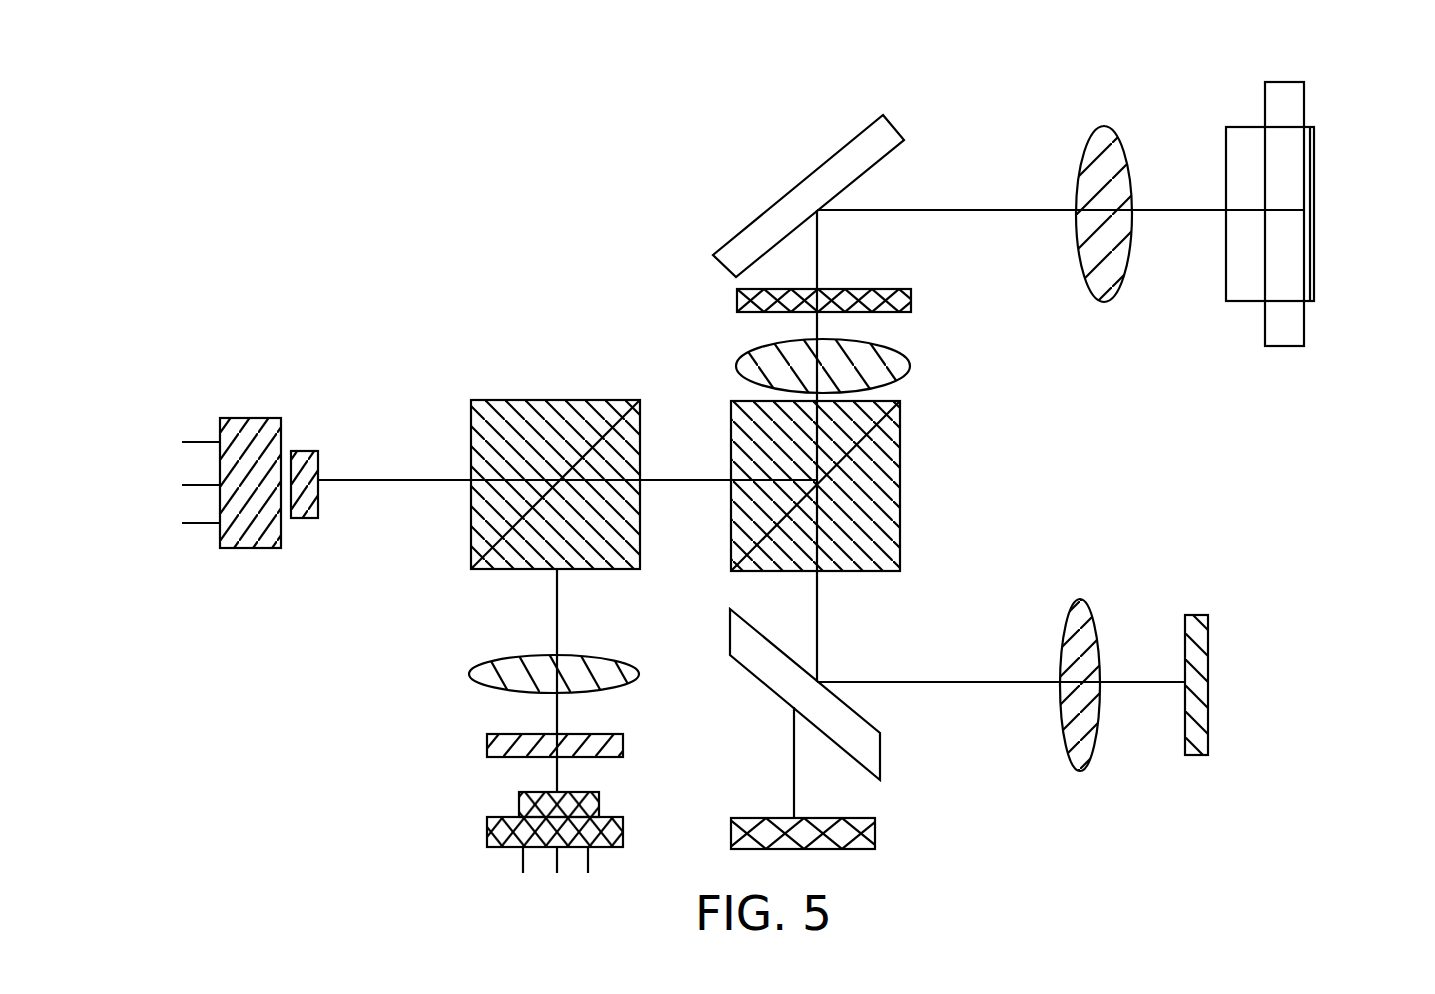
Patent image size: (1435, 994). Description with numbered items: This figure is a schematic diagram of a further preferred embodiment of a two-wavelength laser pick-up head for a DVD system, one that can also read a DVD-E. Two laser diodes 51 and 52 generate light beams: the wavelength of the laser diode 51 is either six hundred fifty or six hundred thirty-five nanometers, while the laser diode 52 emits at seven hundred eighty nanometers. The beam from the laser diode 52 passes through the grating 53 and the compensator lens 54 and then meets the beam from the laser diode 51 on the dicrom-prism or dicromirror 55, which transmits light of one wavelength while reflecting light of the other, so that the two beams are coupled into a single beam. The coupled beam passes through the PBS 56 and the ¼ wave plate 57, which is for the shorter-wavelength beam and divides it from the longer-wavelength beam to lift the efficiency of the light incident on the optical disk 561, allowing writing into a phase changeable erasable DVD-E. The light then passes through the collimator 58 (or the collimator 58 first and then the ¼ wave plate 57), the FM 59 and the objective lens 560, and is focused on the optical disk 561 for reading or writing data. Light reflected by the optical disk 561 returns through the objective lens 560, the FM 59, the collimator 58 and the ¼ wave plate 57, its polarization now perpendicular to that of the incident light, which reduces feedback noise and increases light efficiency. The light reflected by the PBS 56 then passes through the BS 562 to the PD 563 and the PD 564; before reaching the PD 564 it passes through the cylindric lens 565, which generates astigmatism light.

The laser diode 51 is at (257, 398).
The laser diode 52 is at (467, 835).
The grating 53 is at (477, 750).
The compensator lens 54 is at (467, 657).
The dicrom-prism or dicromirror 55 is at (453, 430).
The PBS 56 is at (905, 443).
The ¼ wave plate 57 is at (915, 280).
The collimator 58 is at (727, 360).
The FM 59 is at (810, 160).
The objective lens 560 is at (1080, 142).
The optical disk 561 is at (1315, 78).
The BS 562 is at (898, 773).
The PD 563 is at (882, 832).
The PD 564 is at (1210, 605).
The cylindric lens 565 is at (1090, 600).